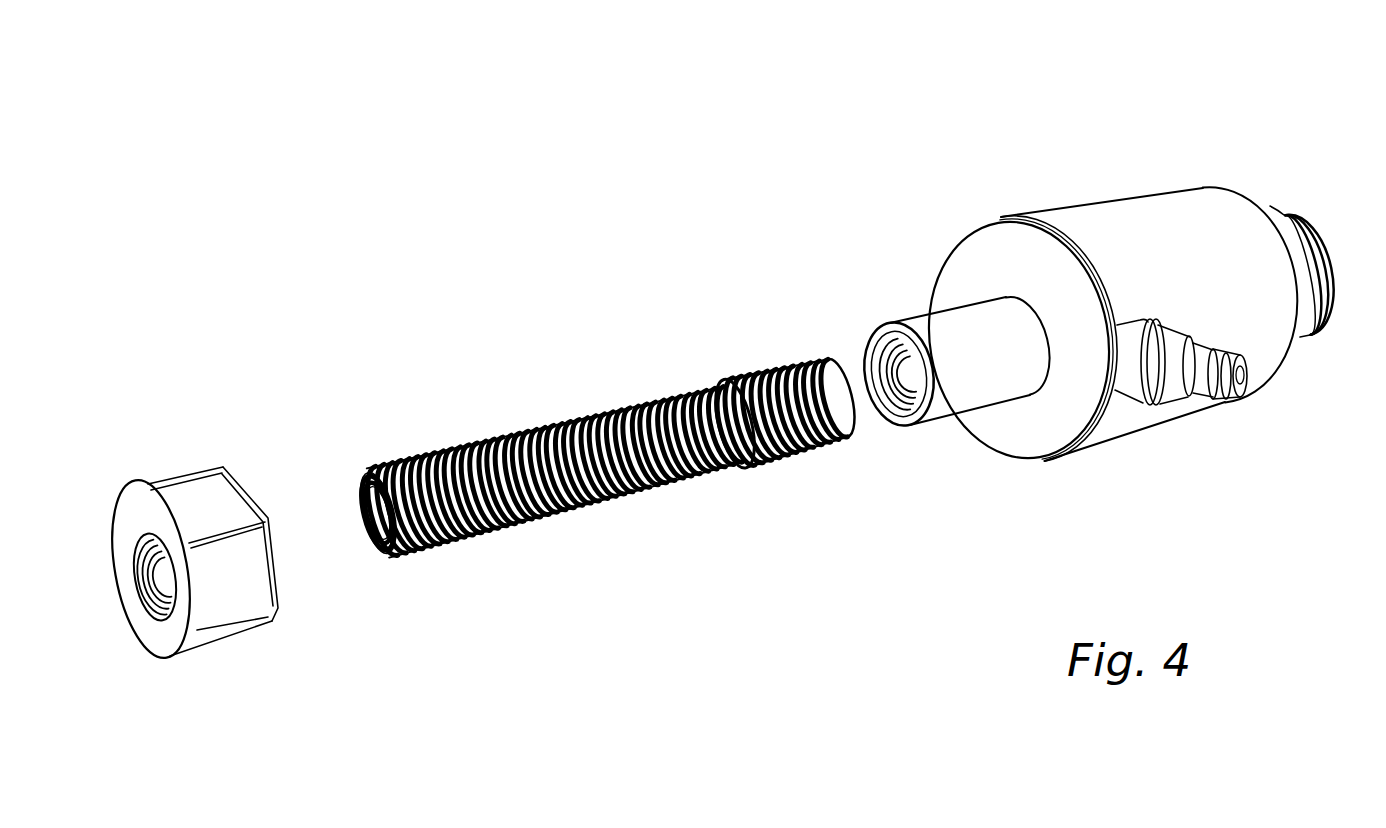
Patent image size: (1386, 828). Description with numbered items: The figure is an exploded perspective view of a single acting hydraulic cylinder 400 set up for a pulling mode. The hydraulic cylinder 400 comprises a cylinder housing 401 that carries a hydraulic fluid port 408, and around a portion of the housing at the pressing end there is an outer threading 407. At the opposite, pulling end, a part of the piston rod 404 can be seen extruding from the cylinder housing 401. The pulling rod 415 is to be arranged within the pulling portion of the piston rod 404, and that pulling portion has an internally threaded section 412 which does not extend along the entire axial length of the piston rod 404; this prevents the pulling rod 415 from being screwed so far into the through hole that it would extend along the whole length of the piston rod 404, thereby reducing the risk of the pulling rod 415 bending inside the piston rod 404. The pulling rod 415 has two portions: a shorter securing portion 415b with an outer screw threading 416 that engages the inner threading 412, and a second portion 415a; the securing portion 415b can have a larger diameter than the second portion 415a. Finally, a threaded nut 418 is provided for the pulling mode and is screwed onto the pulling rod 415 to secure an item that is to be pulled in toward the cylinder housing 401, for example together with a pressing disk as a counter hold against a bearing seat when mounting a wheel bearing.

The hydraulic cylinder 400 is at (1103, 160).
The cylinder housing 401 is at (1122, 428).
The piston rod 404 is at (929, 356).
The outer threading 407 is at (1278, 213).
The hydraulic fluid port 408 is at (1190, 384).
The internally threaded section 412 is at (886, 350).
The pulling rod 415 is at (610, 421).
The second portion of the pulling rod 415a is at (395, 572).
The securing portion 415b is at (863, 456).
The outer screw threading 416 is at (788, 390).
The threaded nut 418 is at (242, 610).